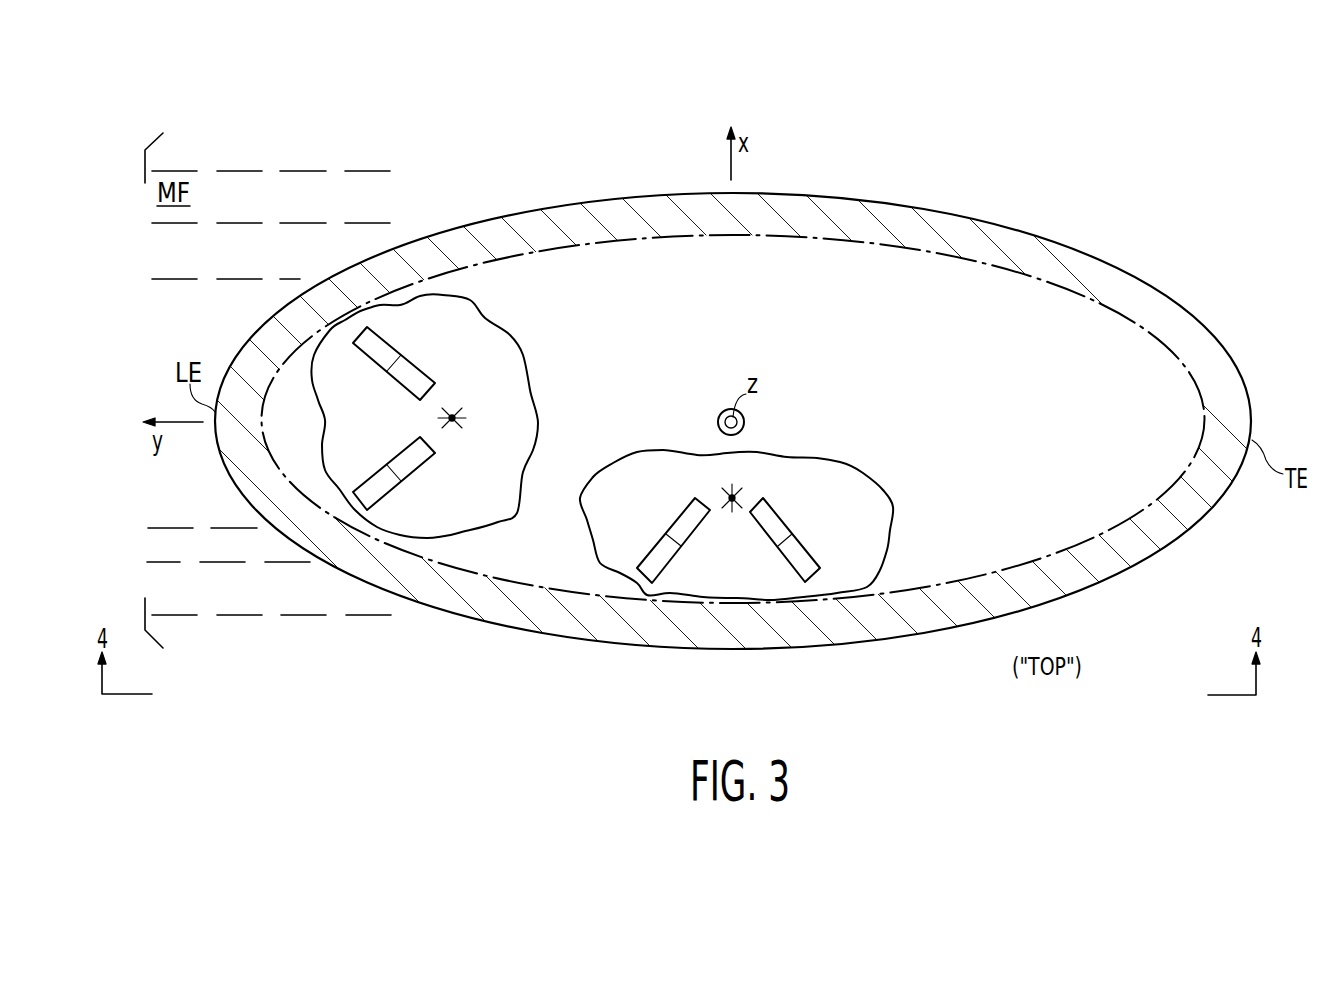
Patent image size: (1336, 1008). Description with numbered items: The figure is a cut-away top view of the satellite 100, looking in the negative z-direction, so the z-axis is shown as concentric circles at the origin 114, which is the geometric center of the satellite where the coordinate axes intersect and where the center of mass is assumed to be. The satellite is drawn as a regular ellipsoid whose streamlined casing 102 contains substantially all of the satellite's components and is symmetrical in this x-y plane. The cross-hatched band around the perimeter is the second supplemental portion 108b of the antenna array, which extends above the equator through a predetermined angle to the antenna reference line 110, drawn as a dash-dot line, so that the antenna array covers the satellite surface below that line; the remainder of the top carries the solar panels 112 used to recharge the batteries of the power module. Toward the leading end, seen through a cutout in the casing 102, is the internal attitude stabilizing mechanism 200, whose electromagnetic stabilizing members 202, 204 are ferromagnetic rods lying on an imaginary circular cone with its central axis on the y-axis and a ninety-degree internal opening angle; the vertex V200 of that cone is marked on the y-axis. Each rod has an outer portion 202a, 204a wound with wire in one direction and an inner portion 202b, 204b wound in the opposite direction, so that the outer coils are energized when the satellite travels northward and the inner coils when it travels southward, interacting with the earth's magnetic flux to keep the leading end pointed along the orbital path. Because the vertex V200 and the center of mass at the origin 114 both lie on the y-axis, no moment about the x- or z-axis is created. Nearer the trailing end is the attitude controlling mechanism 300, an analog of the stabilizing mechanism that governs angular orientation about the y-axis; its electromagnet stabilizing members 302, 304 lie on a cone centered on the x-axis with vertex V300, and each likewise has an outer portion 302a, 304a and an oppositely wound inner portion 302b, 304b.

The satellite 100 is at (1090, 217).
The casing 102 is at (946, 213).
The second supplemental portion of antenna array 108b is at (845, 212).
The antenna reference line 110 is at (1183, 353).
The solar panels 112 is at (1098, 462).
The origin 114 is at (745, 424).
The attitude stabilizing mechanism 200 is at (367, 397).
The electromagnetic stabilizing member 202 is at (435, 392).
The outer portion of stabilizing member 202a is at (378, 343).
The inner portion of stabilizing member 202b is at (420, 373).
The electromagnetic stabilizing member 204 is at (377, 507).
The outer portion of stabilizing member 204a is at (377, 480).
The inner portion of stabilizing member 204b is at (417, 462).
The vertex of stabilizing cone V200 is at (463, 423).
The attitude controlling mechanism 300 is at (671, 486).
The electromagnet stabilizing member 302 is at (658, 575).
The outer portion of controlling member 302a is at (653, 555).
The inner portion of controlling member 302b is at (685, 528).
The electromagnet stabilizing member 304 is at (815, 577).
The outer portion of controlling member 304a is at (803, 552).
The inner portion of controlling member 304b is at (773, 522).
The vertex of controlling cone V300 is at (734, 493).